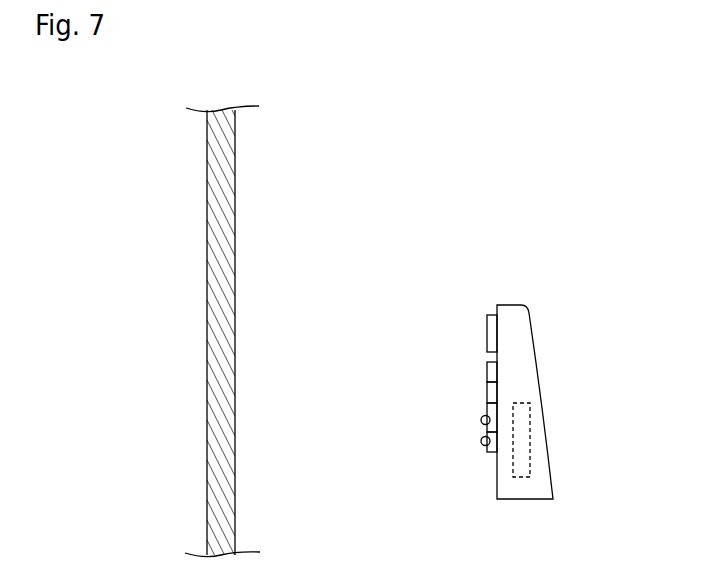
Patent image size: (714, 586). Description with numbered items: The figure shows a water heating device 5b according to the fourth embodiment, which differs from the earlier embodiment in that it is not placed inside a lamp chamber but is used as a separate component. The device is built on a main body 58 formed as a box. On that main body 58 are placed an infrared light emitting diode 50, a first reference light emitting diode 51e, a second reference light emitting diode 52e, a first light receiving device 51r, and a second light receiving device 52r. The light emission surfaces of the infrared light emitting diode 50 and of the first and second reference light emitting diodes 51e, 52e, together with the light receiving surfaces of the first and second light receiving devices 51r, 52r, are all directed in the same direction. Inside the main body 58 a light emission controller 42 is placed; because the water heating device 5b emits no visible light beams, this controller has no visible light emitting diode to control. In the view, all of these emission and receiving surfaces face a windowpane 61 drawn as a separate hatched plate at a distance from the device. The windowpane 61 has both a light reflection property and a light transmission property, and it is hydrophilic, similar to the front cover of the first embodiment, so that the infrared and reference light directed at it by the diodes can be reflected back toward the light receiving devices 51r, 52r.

The windowpane 61 is at (223, 113).
The water heating device 5b is at (543, 276).
The infrared light emitting diode 50 is at (495, 335).
The light emission controller 42 is at (523, 418).
The main body 58 is at (538, 458).
The first reference light emitting diode 51e is at (490, 375).
The second reference light emitting diode 52e is at (488, 393).
The first light receiving device 51r is at (487, 428).
The second light receiving device 52r is at (487, 451).